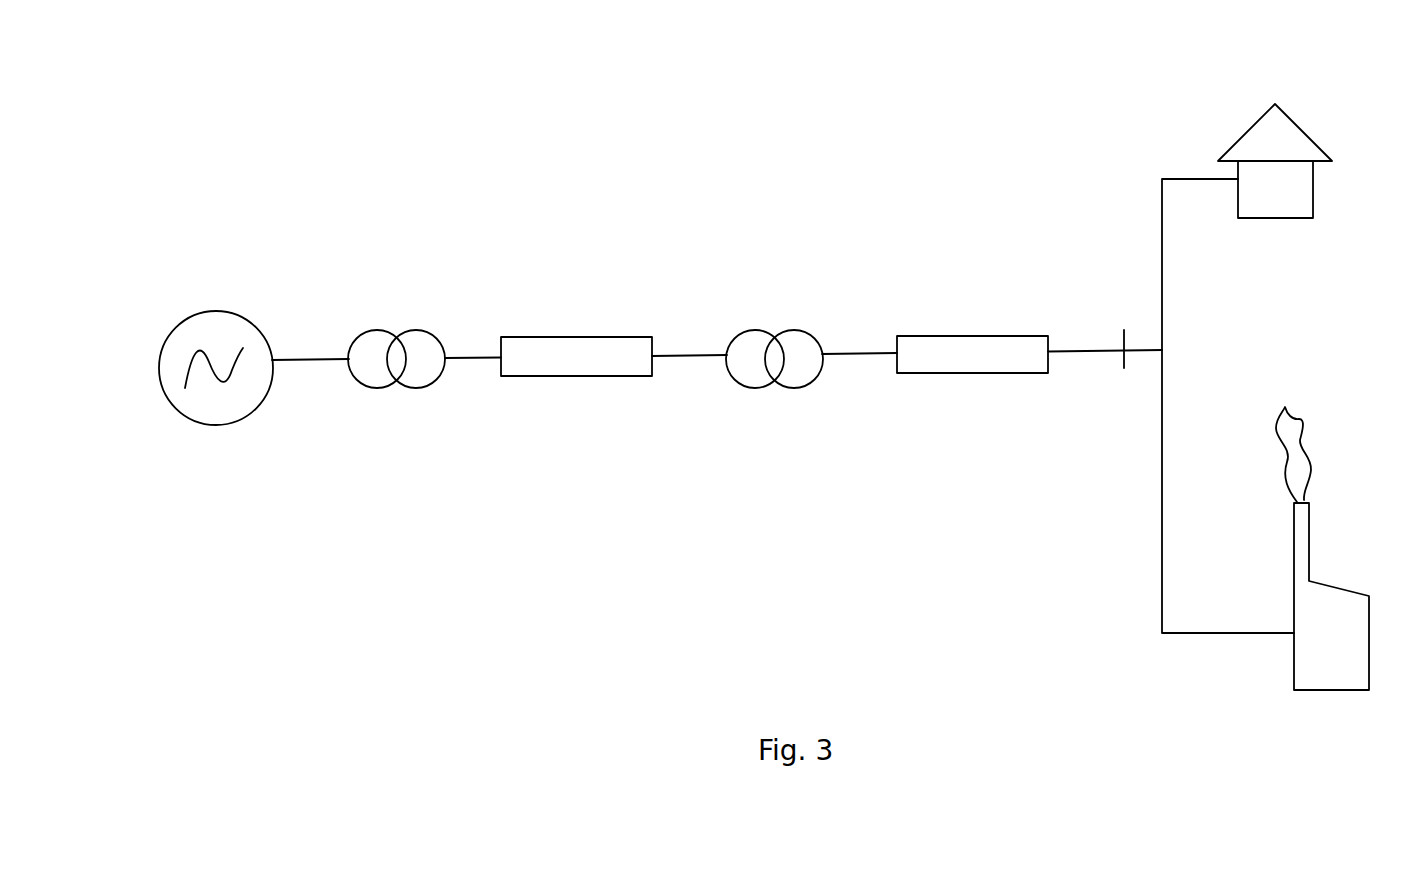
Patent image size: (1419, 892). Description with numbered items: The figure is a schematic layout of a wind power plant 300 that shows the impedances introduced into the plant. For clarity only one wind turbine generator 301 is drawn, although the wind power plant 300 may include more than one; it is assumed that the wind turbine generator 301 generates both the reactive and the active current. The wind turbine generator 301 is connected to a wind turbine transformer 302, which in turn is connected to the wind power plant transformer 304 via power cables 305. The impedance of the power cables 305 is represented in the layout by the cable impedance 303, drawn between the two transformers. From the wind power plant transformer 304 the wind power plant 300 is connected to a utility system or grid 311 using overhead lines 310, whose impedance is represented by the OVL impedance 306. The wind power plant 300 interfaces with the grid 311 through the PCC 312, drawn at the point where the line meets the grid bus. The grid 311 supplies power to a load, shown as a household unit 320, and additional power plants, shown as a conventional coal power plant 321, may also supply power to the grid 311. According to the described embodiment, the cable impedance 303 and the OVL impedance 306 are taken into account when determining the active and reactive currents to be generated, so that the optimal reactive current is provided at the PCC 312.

The wind power plant 300 is at (747, 123).
The wind turbine generator 301 is at (221, 312).
The wind turbine transformer 302 is at (388, 331).
The cable impedance 303 is at (597, 340).
The wind power plant transformer 304 is at (766, 331).
The power cables 305 is at (673, 357).
The OVL impedance 306 is at (955, 340).
The overhead lines 310 is at (1083, 350).
The grid 311 is at (1143, 350).
The PCC 312 is at (1123, 351).
The household unit 320 is at (1293, 199).
The conventional coal power plant 321 is at (1349, 655).